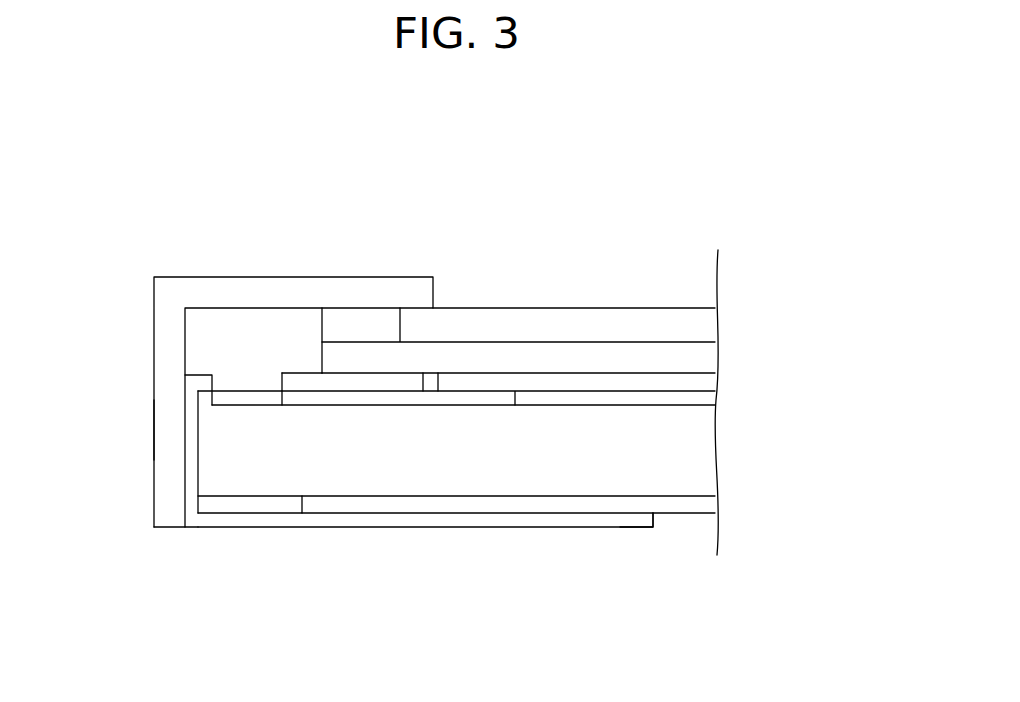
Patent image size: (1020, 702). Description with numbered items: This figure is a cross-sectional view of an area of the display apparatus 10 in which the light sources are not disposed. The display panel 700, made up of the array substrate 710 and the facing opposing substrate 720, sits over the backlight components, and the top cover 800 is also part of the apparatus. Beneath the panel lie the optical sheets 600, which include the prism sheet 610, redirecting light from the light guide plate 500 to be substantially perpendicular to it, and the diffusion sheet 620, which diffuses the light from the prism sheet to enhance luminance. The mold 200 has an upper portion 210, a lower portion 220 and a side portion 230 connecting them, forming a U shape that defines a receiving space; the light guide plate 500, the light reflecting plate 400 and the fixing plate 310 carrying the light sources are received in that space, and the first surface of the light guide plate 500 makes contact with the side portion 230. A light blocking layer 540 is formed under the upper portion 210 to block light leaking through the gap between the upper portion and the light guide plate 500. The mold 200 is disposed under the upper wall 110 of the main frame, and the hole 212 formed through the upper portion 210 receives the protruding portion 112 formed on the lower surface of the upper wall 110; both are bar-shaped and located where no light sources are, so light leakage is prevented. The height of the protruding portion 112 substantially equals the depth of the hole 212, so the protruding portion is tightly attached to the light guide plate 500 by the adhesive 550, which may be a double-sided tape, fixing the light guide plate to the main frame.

The display apparatus 10 is at (403, 180).
The upper wall 110 is at (190, 341).
The protruding portion 112 is at (237, 382).
The mold 200 is at (503, 527).
The upper portion 210 is at (360, 382).
The hole 212 is at (193, 378).
The lower portion 220 is at (606, 527).
The side portion 230 is at (192, 492).
The fixing plate 310 is at (275, 508).
The light reflecting plate 400 is at (710, 507).
The light guide plate 500 is at (710, 446).
The light blocking layer 540 is at (377, 404).
The adhesive 550 is at (266, 397).
The optical sheets 600 is at (560, 381).
The prism sheet 610 is at (712, 397).
The diffusion sheet 620 is at (712, 380).
The display panel 700 is at (518, 289).
The array substrate 710 is at (609, 357).
The opposing substrate 720 is at (547, 323).
The top cover 800 is at (162, 450).